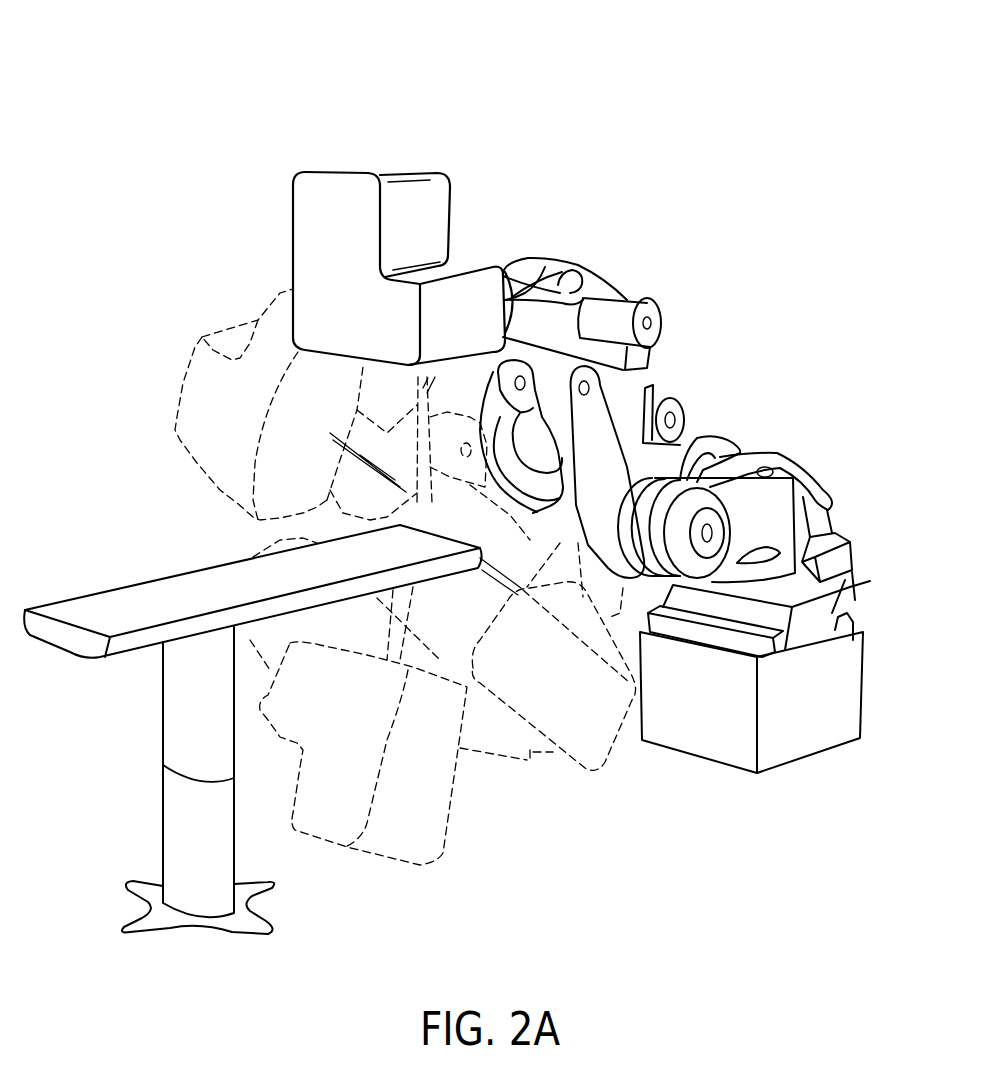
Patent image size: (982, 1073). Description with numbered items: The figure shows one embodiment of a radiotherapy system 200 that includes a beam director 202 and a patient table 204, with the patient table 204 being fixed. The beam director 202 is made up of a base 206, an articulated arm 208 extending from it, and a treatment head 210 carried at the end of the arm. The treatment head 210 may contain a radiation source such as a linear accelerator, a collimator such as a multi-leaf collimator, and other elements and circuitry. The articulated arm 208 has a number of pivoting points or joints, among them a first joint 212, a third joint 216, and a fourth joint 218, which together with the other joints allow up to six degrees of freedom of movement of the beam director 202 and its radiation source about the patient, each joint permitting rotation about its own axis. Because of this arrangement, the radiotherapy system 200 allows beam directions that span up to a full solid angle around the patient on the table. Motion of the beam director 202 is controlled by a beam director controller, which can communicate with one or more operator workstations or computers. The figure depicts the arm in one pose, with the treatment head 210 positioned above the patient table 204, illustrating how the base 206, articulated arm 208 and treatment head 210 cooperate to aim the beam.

The radiotherapy system 200 is at (152, 128).
The beam director 202 is at (768, 285).
The patient table 204 is at (133, 597).
The base 206 is at (808, 742).
The articulated arm 208 is at (648, 388).
The treatment head 210 is at (402, 181).
The first joint 212 is at (703, 487).
The third joint 216 is at (598, 285).
The fourth joint 218 is at (545, 267).